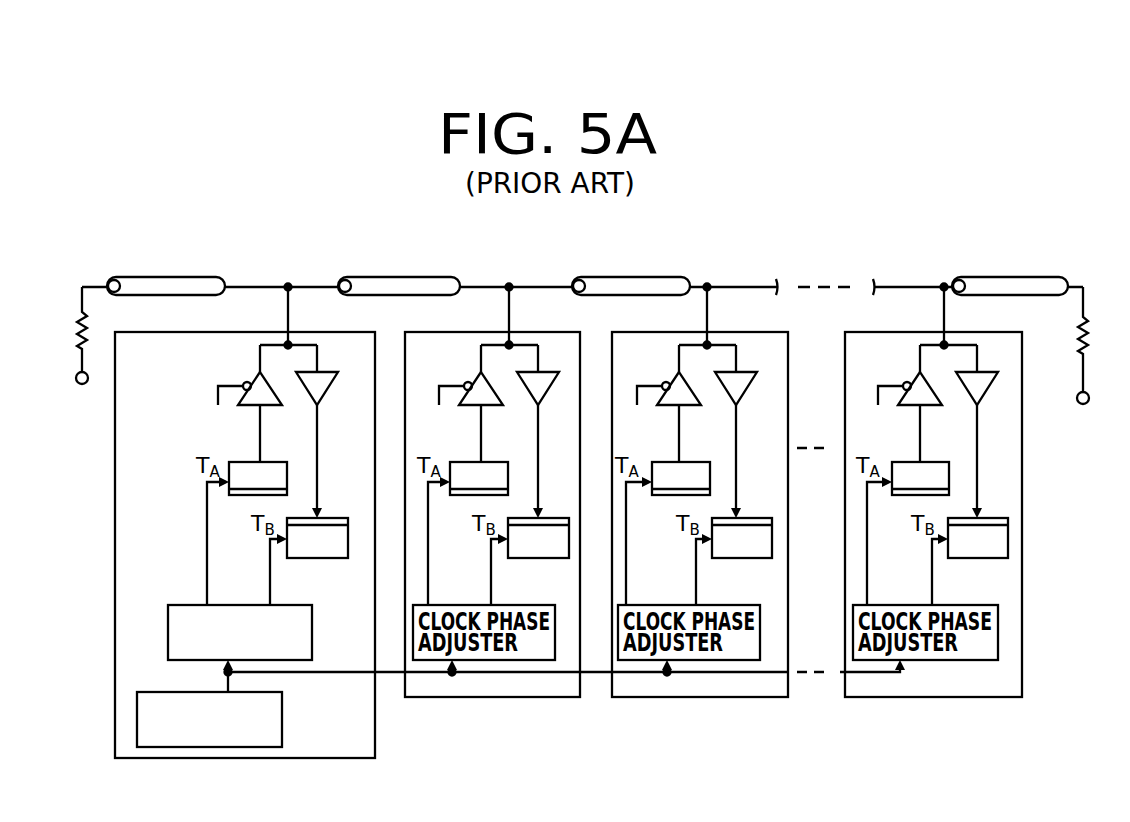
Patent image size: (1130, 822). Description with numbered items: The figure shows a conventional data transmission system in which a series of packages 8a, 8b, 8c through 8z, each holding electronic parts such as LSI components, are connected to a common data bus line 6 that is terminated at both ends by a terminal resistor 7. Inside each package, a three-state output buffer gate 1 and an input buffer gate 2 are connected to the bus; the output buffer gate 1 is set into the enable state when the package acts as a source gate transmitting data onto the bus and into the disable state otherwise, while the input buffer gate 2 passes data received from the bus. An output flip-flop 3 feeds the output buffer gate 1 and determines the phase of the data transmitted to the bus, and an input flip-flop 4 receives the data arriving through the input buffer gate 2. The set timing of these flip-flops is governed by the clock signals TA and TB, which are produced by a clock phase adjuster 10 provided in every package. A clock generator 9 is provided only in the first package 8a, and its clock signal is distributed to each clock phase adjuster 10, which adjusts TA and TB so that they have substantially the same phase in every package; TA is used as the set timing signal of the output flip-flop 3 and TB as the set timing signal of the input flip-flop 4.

The 3-state output buffer gate 1 is at (251, 373).
The input buffer gate 2 is at (325, 374).
The output flip-flop 3 is at (288, 471).
The input flip-flop 4 is at (327, 558).
The data bus line 6 is at (637, 280).
The terminal resistor 7 is at (92, 322).
The package 8a is at (307, 758).
The package 8b is at (485, 697).
The package 8c is at (700, 697).
The package 8z is at (947, 697).
The clock generator 9 is at (282, 718).
The clock phase adjuster 10 is at (183, 605).